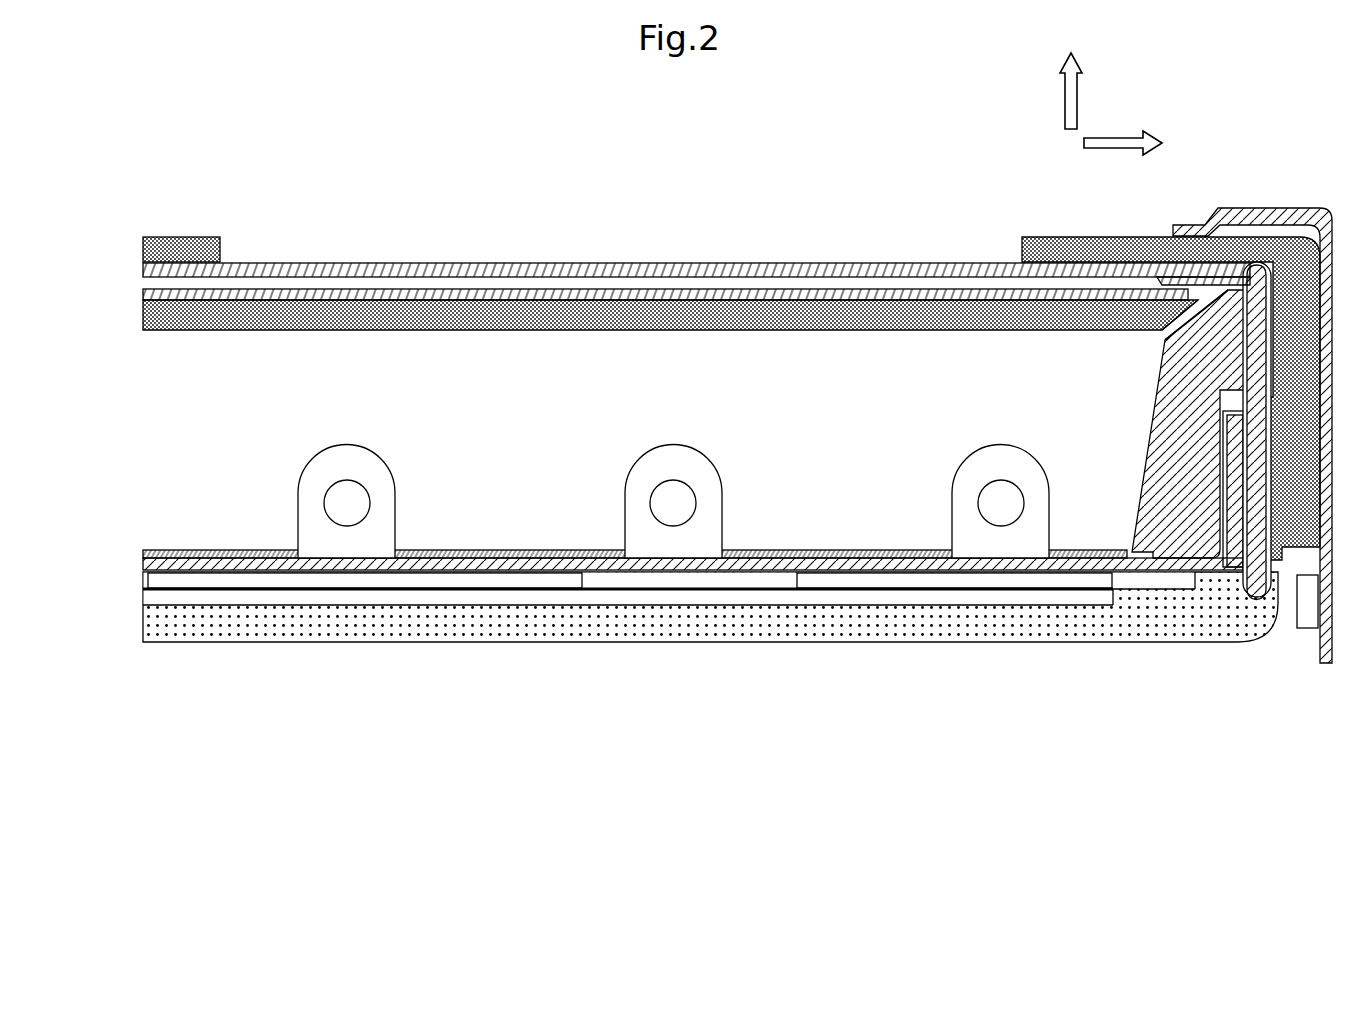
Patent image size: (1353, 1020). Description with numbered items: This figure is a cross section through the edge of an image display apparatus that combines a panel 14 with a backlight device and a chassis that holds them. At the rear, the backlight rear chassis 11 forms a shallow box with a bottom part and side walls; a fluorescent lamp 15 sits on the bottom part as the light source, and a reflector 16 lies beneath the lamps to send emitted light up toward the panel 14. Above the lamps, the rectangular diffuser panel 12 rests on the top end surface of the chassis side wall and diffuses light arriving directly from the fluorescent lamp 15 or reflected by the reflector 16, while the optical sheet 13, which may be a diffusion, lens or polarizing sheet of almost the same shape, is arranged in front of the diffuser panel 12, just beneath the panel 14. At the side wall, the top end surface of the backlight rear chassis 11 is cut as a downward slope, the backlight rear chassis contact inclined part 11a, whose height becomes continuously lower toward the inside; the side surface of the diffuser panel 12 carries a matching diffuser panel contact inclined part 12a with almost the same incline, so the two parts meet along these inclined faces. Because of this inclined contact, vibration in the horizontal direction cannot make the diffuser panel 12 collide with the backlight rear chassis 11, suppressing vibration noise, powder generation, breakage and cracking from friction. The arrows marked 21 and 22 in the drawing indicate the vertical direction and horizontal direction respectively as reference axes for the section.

The backlight rear chassis 11 is at (1183, 497).
The backlight rear chassis contact inclined part 11a is at (1026, 362).
The diffuser panel 12 is at (885, 315).
The diffuser panel contact inclined part 12a is at (1166, 322).
The optical sheet 13 is at (781, 291).
The panel 14 is at (486, 268).
The fluorescent lamp 15 is at (655, 483).
The reflector 16 is at (752, 560).
The vertical direction 21 is at (1160, 75).
The horizontal direction 22 is at (1202, 162).